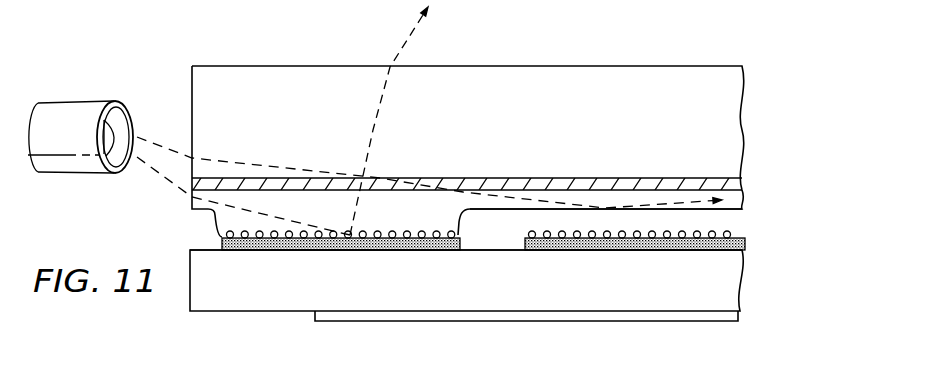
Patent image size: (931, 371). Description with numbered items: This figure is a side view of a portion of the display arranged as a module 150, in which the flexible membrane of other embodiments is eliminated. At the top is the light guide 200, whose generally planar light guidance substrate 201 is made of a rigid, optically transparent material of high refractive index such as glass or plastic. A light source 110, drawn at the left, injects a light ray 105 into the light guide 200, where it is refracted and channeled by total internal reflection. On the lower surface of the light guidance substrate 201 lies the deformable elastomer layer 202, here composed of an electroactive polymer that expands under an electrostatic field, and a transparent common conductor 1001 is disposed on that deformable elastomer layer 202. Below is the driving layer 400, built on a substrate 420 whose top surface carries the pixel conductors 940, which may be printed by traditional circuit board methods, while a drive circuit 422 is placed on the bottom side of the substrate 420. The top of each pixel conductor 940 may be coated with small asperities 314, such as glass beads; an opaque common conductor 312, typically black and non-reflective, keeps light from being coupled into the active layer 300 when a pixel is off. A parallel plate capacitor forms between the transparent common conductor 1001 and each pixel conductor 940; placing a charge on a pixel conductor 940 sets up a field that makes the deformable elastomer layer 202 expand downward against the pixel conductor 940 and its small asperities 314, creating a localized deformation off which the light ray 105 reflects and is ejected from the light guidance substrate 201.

The module 150 is at (112, 68).
The light source 110 is at (72, 175).
The light ray 105 is at (380, 108).
The light guide 200 is at (826, 70).
The light guidance substrate 201 is at (745, 92).
The transparent common conductor 1001 is at (745, 183).
The deformable elastomer layer 202 is at (745, 198).
The active layer 300 is at (826, 230).
The common conductor 312 is at (222, 238).
The small asperities 314 is at (728, 235).
The driving layer 400 is at (826, 253).
The pixel conductor 940 is at (743, 250).
The substrate 420 is at (743, 272).
The drive circuit 422 is at (738, 318).